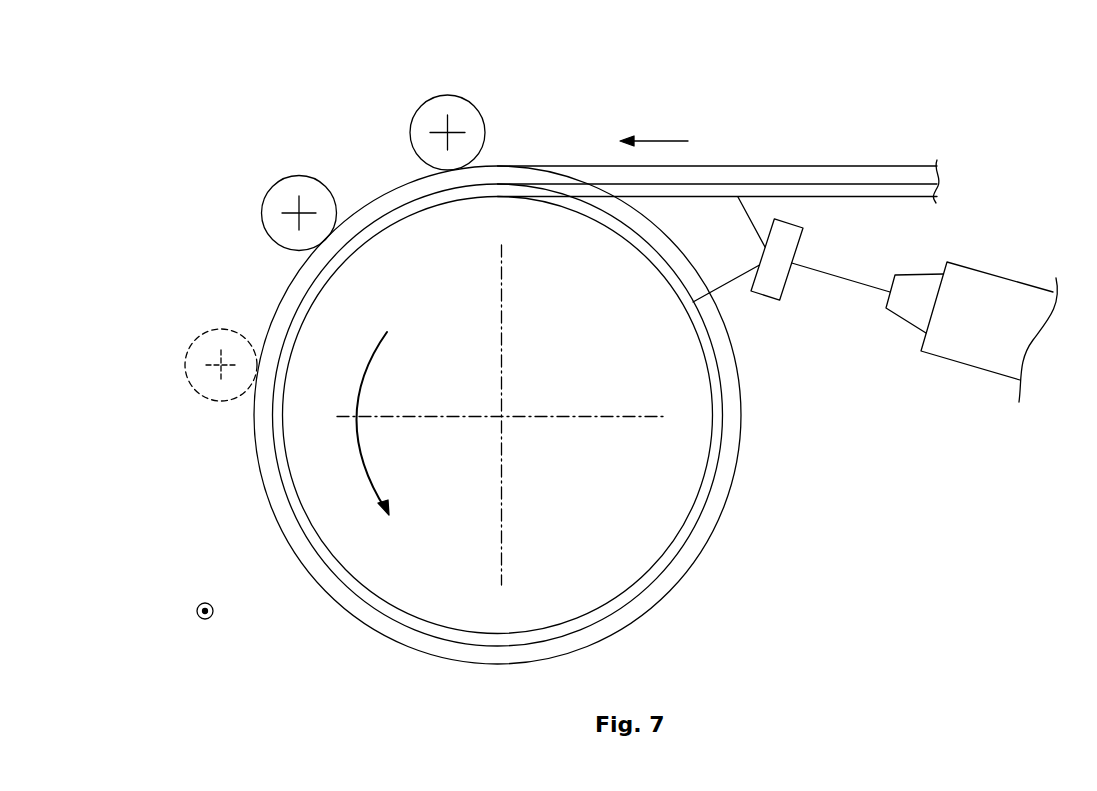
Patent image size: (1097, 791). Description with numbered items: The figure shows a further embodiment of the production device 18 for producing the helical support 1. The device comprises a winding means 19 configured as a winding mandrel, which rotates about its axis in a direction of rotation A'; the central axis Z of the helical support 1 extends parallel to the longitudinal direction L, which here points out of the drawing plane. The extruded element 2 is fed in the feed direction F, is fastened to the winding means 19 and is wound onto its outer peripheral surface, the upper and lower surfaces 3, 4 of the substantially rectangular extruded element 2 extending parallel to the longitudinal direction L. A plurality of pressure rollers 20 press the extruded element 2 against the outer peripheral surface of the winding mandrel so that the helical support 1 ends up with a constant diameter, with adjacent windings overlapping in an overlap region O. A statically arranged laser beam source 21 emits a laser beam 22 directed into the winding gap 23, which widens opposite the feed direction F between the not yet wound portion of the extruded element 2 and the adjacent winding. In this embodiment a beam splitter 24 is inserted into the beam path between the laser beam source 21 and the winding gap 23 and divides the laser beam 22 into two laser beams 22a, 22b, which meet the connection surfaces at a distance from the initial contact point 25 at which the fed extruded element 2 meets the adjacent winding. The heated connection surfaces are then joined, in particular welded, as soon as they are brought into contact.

The helical support 1 is at (716, 597).
The extruded element 2 is at (746, 141).
The upper surface 3 is at (741, 400).
The lower surface 4 is at (702, 353).
The production device 18 is at (232, 68).
The winding means 19 is at (597, 513).
The pressure rollers 20 is at (448, 95).
The laser beam source 21 is at (944, 390).
The laser beam 22 is at (840, 282).
The laser beam 22a is at (753, 222).
The laser beam 22b is at (731, 280).
The winding gap 23 is at (646, 208).
The beam splitter 24 is at (790, 237).
The initial contact point 25 is at (521, 197).
The direction of rotation A' is at (392, 423).
The feed direction F is at (661, 141).
The longitudinal direction L is at (216, 611).
The overlap region O is at (730, 438).
The central axis Z is at (502, 417).